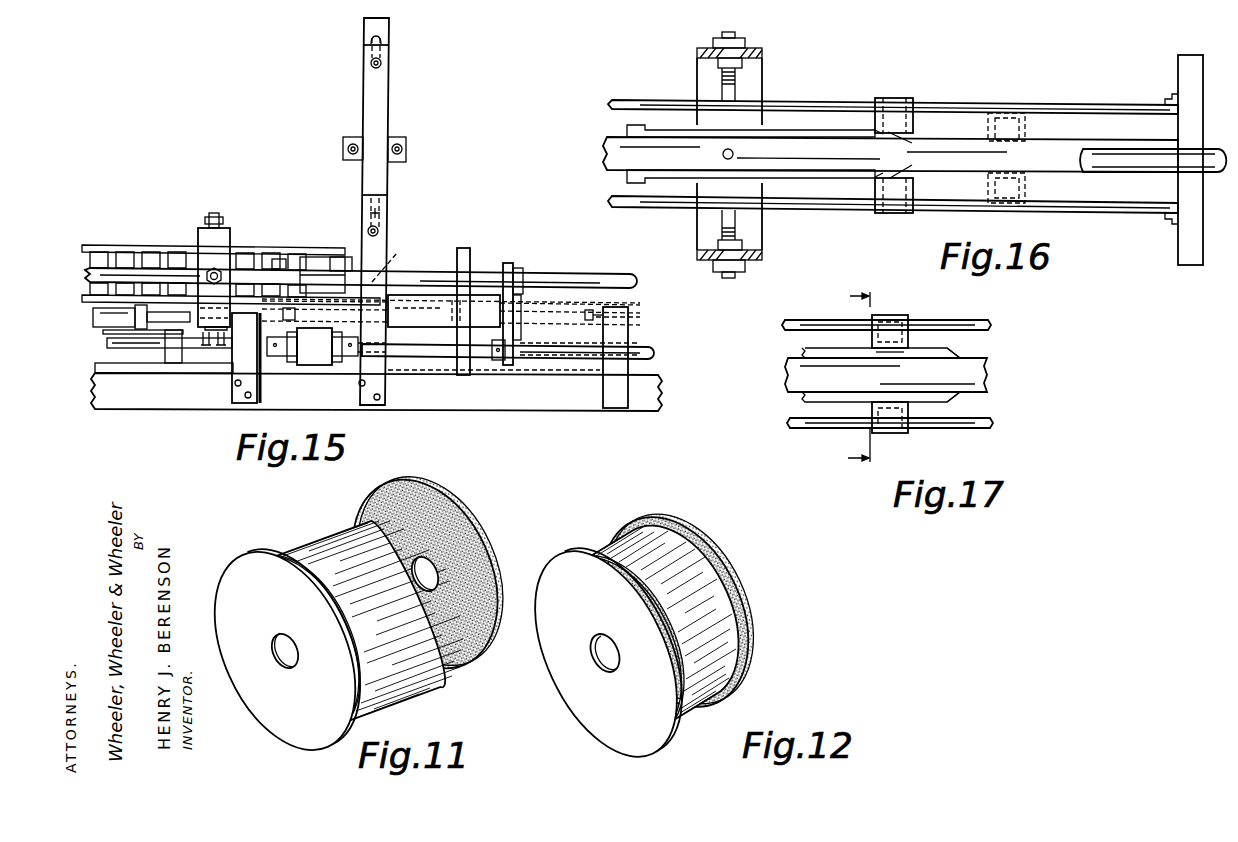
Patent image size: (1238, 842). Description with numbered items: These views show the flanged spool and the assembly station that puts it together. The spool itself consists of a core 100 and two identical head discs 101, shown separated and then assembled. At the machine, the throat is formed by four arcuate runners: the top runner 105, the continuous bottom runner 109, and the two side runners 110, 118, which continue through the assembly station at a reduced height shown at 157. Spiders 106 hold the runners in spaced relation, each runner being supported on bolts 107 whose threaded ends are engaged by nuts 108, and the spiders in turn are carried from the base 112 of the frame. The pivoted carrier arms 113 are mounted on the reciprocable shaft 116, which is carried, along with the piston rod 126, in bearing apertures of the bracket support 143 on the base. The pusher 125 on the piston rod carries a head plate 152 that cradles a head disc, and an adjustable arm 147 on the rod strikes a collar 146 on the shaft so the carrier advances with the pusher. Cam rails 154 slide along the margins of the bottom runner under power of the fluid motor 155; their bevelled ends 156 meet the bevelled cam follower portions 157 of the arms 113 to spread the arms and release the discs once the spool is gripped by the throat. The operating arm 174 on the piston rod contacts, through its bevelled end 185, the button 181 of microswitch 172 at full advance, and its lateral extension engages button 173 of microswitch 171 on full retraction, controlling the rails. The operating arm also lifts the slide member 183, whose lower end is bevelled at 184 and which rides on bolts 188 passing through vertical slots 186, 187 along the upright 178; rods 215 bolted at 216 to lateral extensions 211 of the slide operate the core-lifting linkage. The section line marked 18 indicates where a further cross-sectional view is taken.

In FIG. 11, the core 100 is at (398, 690).
In FIG. 12, the core 100 is at (712, 648).
In FIG. 11, the head discs 101 is at (465, 548).
In FIG. 12, the head discs 101 is at (558, 568).
In FIG. 15, the top runner 105 is at (130, 245).
In FIG. 15, the spiders 106 is at (199, 232).
In FIG. 16, the spiders 106 is at (697, 52).
In FIG. 16, the bolts 107 is at (738, 88).
In FIG. 16, the nuts 108 is at (745, 63).
In FIG. 15, the bottom runner 109 is at (86, 262).
In FIG. 16, the bottom runner 109 is at (956, 152).
In FIG. 17, the bottom runner 109 is at (795, 380).
In FIG. 15, the side runner 110 is at (124, 268).
In FIG. 16, the side runner 110 is at (1115, 212).
In FIG. 17, the side runner 110 is at (793, 424).
In FIG. 15, the base 112 is at (578, 374).
In FIG. 15, the carrier arms 113 is at (317, 365).
In FIG. 16, the carrier arms 113 is at (912, 120).
In FIG. 17, the carrier arms 113 is at (905, 340).
In FIG. 15, the shaft 116 is at (437, 358).
In FIG. 16, the side runner 118 is at (1112, 104).
In FIG. 17, the side runner 118 is at (805, 320).
In FIG. 15, the pusher 125 is at (342, 263).
In FIG. 15, the piston rod 126 is at (497, 268).
In FIG. 16, the piston rod 126 is at (1152, 149).
In FIG. 15, the bracket support 143 is at (462, 258).
In FIG. 16, the bracket support 143 is at (1190, 76).
In FIG. 15, the collar 146 is at (497, 362).
In FIG. 15, the arm 147 is at (506, 338).
In FIG. 15, the head plate 152 is at (330, 257).
In FIG. 15, the cam rails 154 is at (328, 302).
In FIG. 16, the cam rails 154 is at (828, 138).
In FIG. 17, the cam rails 154 is at (822, 356).
In FIG. 15, the fluid motor 155 is at (98, 322).
In FIG. 16, the bevelled ends 156 is at (915, 130).
In FIG. 17, the bevelled ends 156 is at (960, 354).
In FIG. 15, the cam follower portions 157 is at (280, 256).
In FIG. 16, the cam follower portions 157 is at (878, 117).
In FIG. 17, the cam follower portions 157 is at (876, 352).
In FIG. 15, the microswitch 171 is at (636, 316).
In FIG. 15, the microswitch 172 is at (228, 336).
In FIG. 15, the switch button 173 is at (594, 320).
In FIG. 15, the operating arm 174 is at (404, 316).
In FIG. 15, the upright 178 is at (387, 196).
In FIG. 15, the switch button 181 is at (262, 340).
In FIG. 15, the slide member 183 is at (389, 34).
In FIG. 15, the bevelled lower end 184 is at (398, 258).
In FIG. 15, the bevelled end 185 is at (290, 318).
In FIG. 15, the vertical slot 186 is at (389, 42).
In FIG. 15, the vertical slot 187 is at (380, 214).
In FIG. 15, the bolts 188 is at (381, 66).
In FIG. 15, the lateral extensions 211 is at (401, 137).
In FIG. 15, the rods 215 is at (406, 157).
In FIG. 15, the bolt connection 216 is at (406, 148).
In FIG. 17, the section line 18 is at (846, 378).